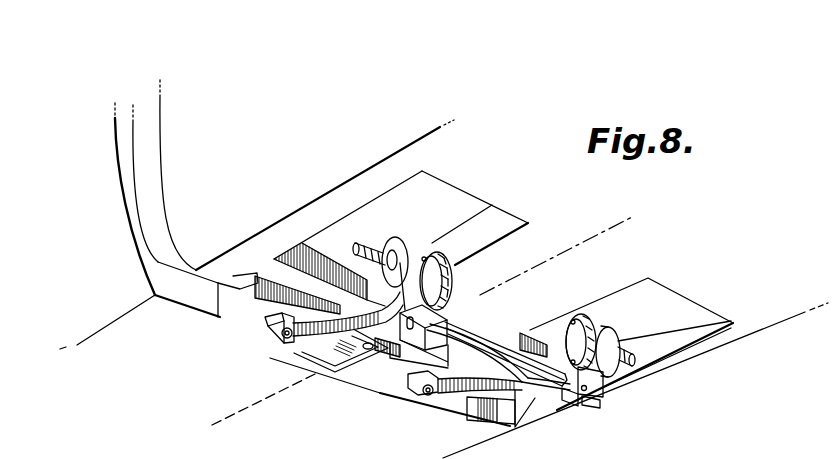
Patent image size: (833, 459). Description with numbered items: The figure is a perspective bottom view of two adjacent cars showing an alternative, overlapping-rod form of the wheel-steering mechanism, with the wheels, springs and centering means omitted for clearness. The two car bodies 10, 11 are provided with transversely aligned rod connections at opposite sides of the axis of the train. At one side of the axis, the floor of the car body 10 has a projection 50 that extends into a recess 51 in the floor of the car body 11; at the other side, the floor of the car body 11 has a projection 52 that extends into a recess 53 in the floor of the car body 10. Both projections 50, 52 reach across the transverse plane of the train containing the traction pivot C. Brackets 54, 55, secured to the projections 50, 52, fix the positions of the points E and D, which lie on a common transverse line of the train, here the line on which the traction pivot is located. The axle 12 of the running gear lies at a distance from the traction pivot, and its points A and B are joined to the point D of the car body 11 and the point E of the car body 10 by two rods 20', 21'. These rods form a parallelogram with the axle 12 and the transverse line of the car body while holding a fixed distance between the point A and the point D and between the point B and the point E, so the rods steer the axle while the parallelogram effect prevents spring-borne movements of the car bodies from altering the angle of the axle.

The car body 10 is at (107, 226).
The car body 11 is at (182, 175).
The projection 50 is at (233, 296).
The recess 51 is at (246, 278).
The bracket 54 is at (280, 333).
The point E is at (283, 345).
The rod 20' is at (361, 378).
The rod 21' is at (635, 368).
The traction pivot C is at (366, 350).
The projection 52 is at (395, 370).
The axle 12 is at (487, 345).
The bracket 55 is at (480, 373).
The point D is at (426, 396).
The recess 53 is at (451, 406).
The point A is at (597, 337).
The point B is at (447, 254).